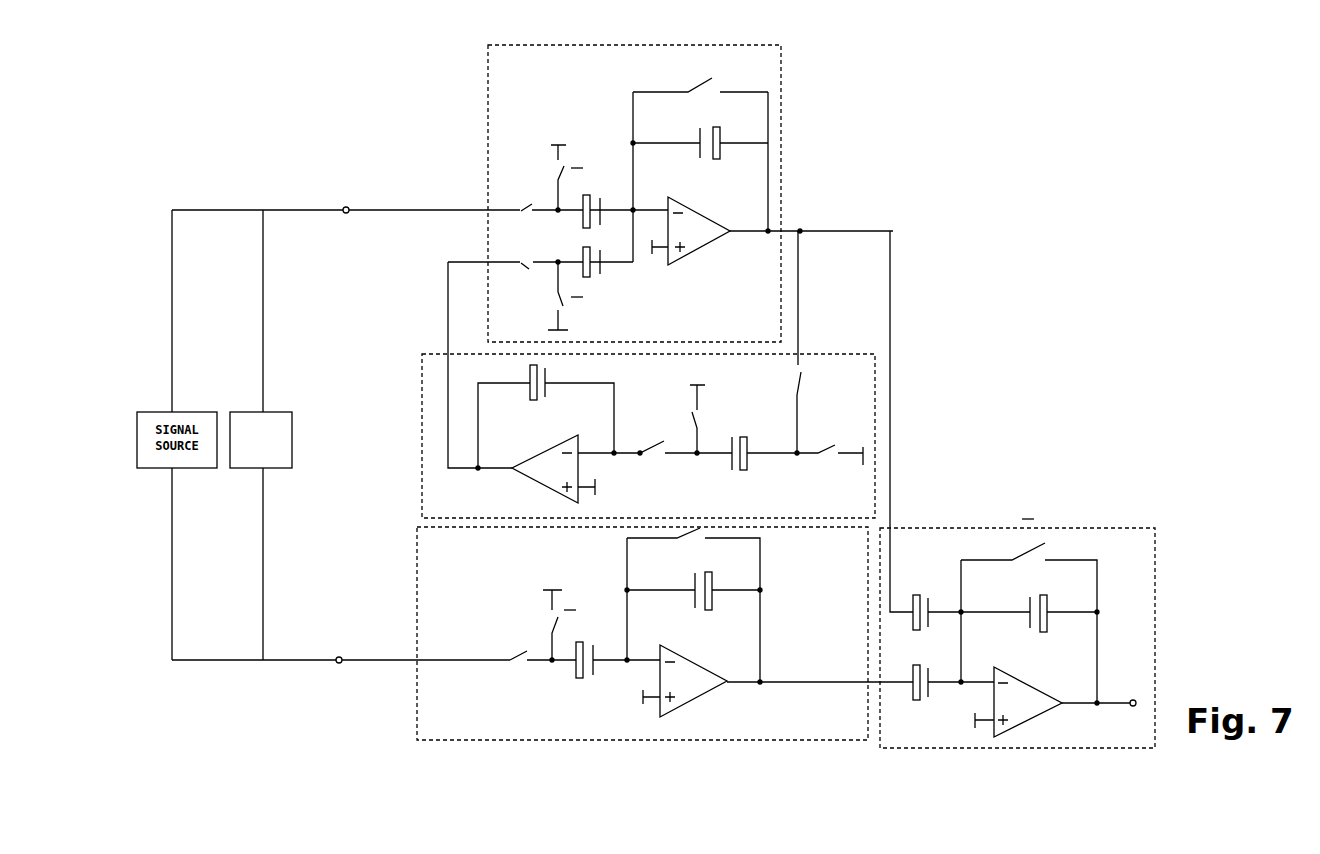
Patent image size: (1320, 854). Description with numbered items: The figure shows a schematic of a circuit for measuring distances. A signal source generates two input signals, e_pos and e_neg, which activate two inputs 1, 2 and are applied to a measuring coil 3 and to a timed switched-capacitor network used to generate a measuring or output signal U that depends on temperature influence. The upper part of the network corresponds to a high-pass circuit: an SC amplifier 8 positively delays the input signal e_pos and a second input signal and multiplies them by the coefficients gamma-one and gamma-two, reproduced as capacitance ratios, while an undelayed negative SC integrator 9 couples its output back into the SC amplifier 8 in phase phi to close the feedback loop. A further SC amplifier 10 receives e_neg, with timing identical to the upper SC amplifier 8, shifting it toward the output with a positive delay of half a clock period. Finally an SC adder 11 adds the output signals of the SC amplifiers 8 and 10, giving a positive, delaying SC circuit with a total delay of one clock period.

The input 1 is at (368, 662).
The input 2 is at (428, 210).
The measuring coil 3 is at (292, 448).
The SC amplifier 8 is at (782, 157).
The SC integrator 9 is at (418, 418).
The SC amplifier 10 is at (415, 590).
The SC adder 11 is at (1155, 573).